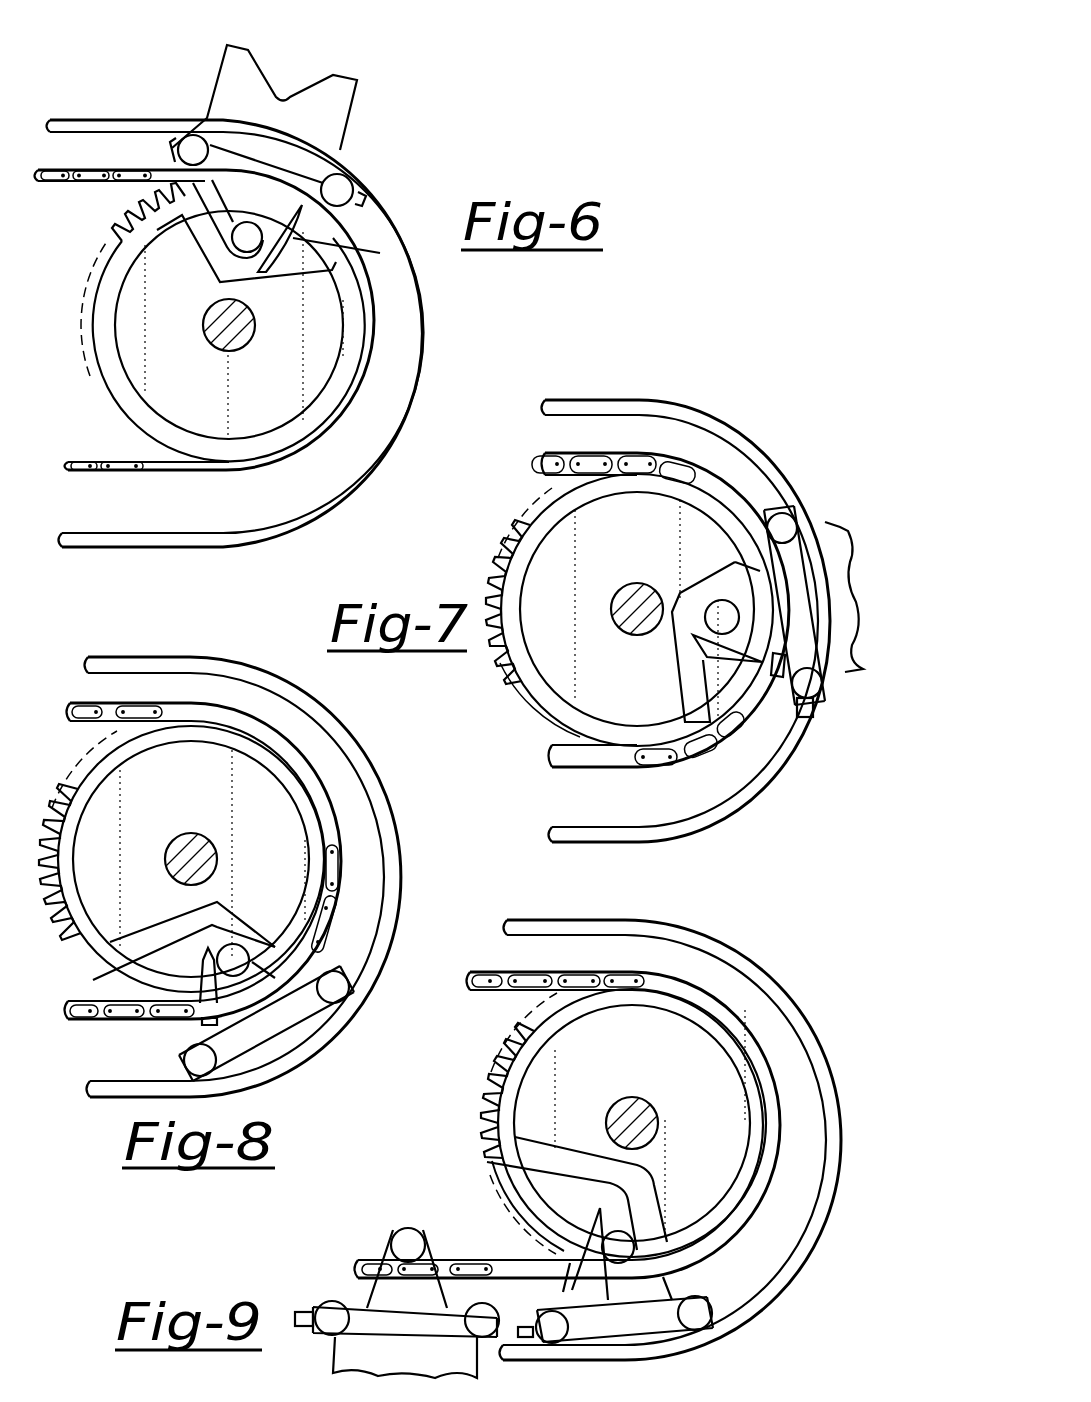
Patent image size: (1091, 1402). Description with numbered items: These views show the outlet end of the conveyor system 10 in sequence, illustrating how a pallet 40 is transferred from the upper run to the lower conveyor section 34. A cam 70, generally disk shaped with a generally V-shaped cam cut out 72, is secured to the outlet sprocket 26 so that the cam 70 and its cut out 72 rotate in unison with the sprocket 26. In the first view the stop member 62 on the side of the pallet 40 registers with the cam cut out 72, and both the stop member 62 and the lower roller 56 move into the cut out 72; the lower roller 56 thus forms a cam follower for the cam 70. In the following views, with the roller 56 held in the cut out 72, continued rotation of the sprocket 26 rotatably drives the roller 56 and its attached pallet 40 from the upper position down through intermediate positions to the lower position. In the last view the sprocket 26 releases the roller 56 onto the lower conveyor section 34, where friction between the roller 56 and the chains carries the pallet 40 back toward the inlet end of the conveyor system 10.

In FIG. 6, the conveyor system 10 is at (174, 57).
In FIG. 7, the outlet sprocket 26 is at (496, 548).
In FIG. 8, the outlet sprocket 26 is at (46, 830).
In FIG. 9, the outlet sprocket 26 is at (488, 1093).
In FIG. 9, the lower conveyor section 34 is at (380, 1258).
In FIG. 6, the pallet 40 is at (368, 93).
In FIG. 7, the pallet 40 is at (870, 548).
In FIG. 8, the pallet 40 is at (277, 1027).
In FIG. 9, the pallet 40 is at (650, 1337).
In FIG. 6, the lower roller 56 is at (250, 243).
In FIG. 7, the lower roller 56 is at (722, 612).
In FIG. 8, the lower roller 56 is at (231, 959).
In FIG. 9, the lower roller 56 is at (620, 1248).
In FIG. 6, the stop member 62 is at (304, 206).
In FIG. 6, the cam 70 is at (128, 307).
In FIG. 6, the cam cut out 72 is at (203, 246).